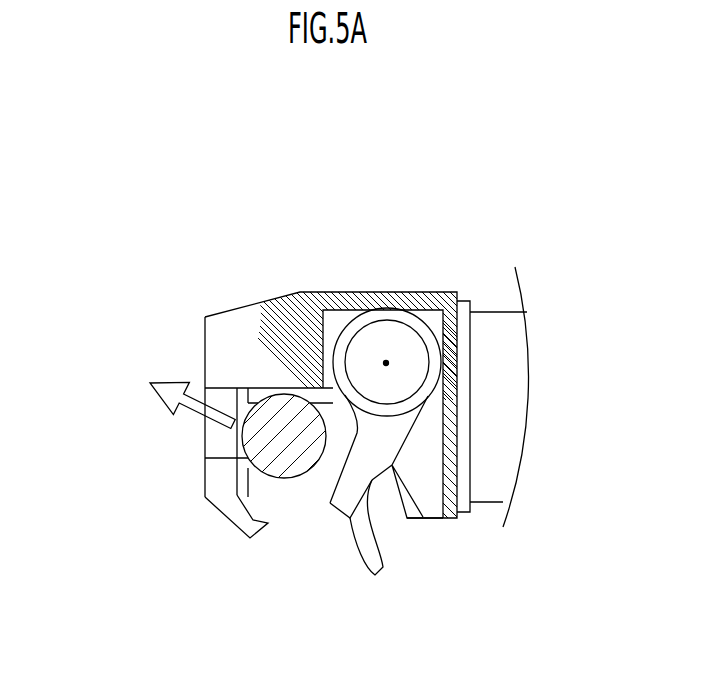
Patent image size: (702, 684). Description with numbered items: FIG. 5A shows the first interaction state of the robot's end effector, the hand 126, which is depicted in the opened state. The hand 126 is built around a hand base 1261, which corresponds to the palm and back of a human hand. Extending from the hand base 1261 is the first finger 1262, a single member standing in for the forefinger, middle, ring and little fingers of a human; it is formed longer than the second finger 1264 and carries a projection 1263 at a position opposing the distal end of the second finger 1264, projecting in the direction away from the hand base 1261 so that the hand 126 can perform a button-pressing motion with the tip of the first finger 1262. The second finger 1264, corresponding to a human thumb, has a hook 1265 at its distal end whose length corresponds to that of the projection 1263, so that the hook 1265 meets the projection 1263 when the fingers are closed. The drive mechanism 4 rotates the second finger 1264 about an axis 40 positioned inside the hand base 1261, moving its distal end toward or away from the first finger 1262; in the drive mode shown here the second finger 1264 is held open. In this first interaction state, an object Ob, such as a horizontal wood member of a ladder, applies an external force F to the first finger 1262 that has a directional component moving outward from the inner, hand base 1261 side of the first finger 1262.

The hand 126 is at (218, 180).
The hand base 1261 is at (285, 293).
The first finger 1262 is at (222, 441).
The projection 1263 is at (212, 497).
The second finger 1264 is at (350, 512).
The hook 1265 is at (378, 567).
The drive mechanism 4 is at (382, 385).
The axis 40 is at (387, 363).
The object Ob is at (262, 412).
The force F is at (185, 405).